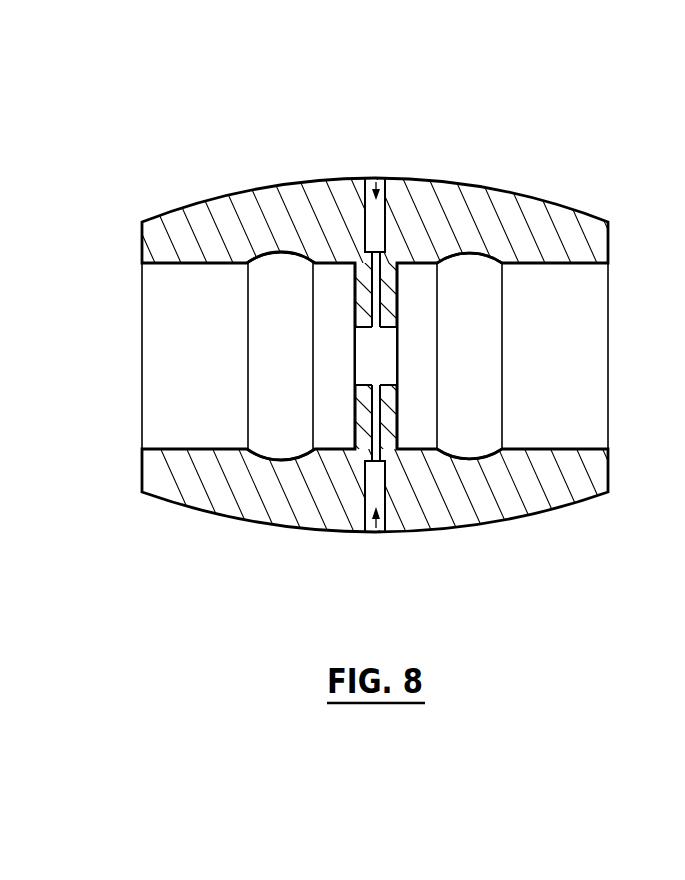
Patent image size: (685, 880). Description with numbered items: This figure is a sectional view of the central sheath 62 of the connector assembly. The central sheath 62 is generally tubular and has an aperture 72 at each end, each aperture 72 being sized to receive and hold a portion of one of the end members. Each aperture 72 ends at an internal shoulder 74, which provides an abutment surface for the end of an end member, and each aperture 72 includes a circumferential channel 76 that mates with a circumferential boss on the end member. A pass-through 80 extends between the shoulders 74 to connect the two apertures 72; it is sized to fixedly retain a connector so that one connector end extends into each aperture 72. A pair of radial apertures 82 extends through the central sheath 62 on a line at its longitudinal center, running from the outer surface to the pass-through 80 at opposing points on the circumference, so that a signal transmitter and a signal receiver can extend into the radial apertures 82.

The central sheath 62 is at (476, 108).
The aperture 72 is at (162, 430).
The internal shoulder 74 is at (355, 295).
The circumferential channel 76 is at (282, 255).
The pass-through 80 is at (387, 360).
The radial aperture 82 is at (377, 188).